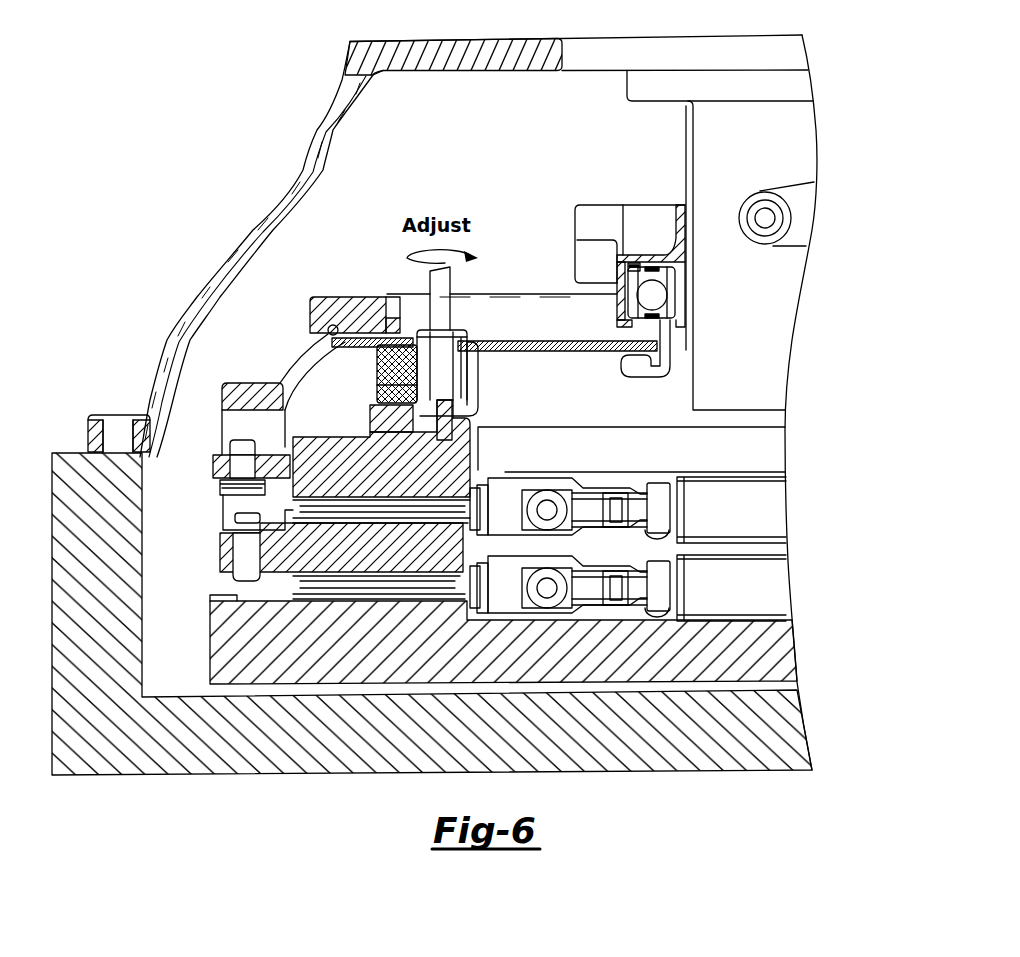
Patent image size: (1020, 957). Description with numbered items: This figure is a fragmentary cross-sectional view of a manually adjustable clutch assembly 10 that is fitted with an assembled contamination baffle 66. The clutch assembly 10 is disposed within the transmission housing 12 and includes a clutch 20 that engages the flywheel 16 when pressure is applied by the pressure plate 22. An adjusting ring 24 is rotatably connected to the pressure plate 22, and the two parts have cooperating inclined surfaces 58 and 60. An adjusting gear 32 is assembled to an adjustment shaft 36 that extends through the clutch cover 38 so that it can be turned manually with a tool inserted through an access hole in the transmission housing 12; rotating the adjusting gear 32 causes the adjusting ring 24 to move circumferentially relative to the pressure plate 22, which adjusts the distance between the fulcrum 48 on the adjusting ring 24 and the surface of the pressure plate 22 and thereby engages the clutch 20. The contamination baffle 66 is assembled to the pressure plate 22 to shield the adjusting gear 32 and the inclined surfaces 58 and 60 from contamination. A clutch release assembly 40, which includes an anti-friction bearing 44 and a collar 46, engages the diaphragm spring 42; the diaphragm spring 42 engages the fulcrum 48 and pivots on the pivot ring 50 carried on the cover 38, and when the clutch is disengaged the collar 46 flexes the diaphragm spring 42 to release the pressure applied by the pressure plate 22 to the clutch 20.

The clutch assembly 10 is at (383, 158).
The transmission housing 12 is at (292, 176).
The flywheel 16 is at (205, 650).
The clutch 20 is at (468, 480).
The pressure plate 22 is at (463, 446).
The adjusting ring 24 is at (376, 367).
The adjusting gear 32 is at (465, 339).
The adjustment shaft 36 is at (448, 283).
The clutch cover 38 is at (311, 296).
The clutch release assembly 40 is at (603, 198).
The diaphragm spring 42 is at (577, 352).
The anti-friction bearing 44 is at (656, 296).
The collar 46 is at (641, 361).
The fulcrum 48 is at (393, 343).
The pivot ring 50 is at (328, 331).
The inclined surface 58 is at (370, 417).
The inclined surface 60 is at (376, 390).
The contamination baffle 66 is at (480, 378).